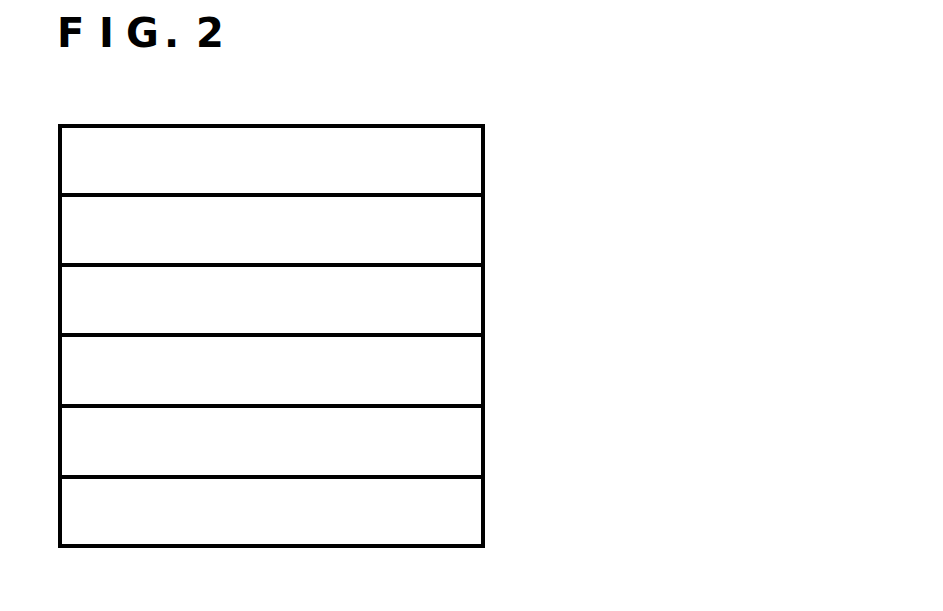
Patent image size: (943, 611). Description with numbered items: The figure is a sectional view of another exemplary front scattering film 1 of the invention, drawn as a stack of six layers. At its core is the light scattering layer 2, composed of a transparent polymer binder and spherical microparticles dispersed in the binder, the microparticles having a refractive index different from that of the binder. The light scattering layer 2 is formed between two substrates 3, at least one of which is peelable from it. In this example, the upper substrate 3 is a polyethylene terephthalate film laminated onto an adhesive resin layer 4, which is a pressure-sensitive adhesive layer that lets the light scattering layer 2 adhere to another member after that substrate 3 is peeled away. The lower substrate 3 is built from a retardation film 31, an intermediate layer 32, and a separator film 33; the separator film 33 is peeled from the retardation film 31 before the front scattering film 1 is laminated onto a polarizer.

The front scattering film 1 is at (762, 123).
The light scattering layer 2 is at (484, 301).
The substrate 3 is at (484, 160).
The adhesive resin layer 4 is at (484, 229).
The retardation film 31 is at (484, 369).
The second sub-layer 32 is at (484, 440).
The separator film 33 is at (484, 509).